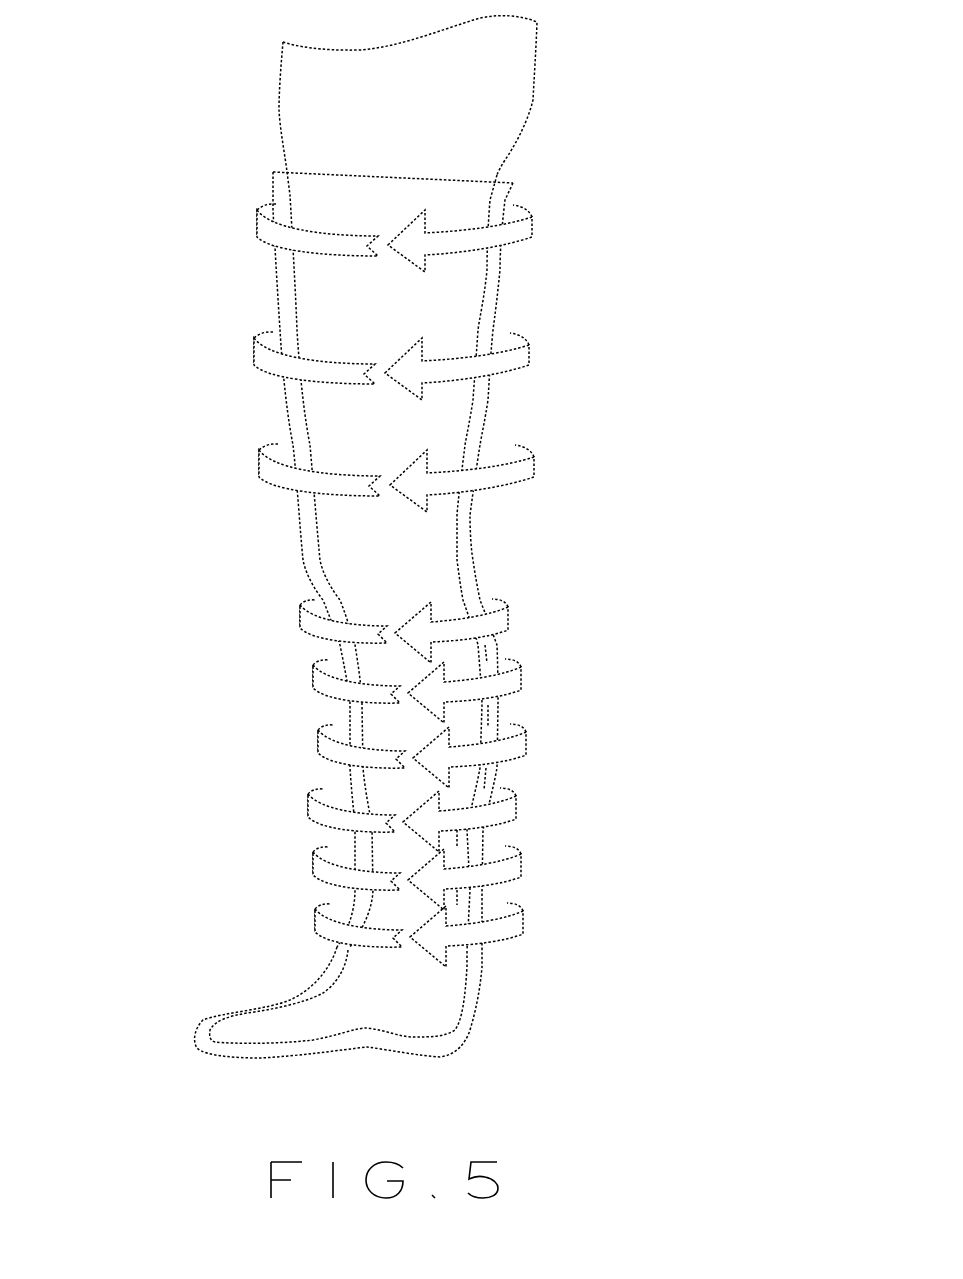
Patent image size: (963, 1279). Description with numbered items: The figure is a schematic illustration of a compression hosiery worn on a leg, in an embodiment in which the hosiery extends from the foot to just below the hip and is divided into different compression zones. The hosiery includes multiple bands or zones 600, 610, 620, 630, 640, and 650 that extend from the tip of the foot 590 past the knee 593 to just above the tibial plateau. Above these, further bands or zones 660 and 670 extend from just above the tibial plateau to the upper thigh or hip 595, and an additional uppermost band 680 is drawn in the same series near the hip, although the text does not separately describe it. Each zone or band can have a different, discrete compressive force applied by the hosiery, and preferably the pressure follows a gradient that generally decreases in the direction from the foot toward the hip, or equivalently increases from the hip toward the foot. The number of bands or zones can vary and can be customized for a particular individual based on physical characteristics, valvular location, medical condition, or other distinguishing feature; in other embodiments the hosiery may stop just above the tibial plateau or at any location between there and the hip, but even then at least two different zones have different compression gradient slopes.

The foot 590 is at (193, 1034).
The knee 593 is at (300, 561).
The upper thigh or hip 595 is at (512, 182).
The band or zone 600 is at (443, 1000).
The band or zone 610 is at (423, 913).
The band or zone 620 is at (423, 852).
The band or zone 630 is at (422, 792).
The band or zone 640 is at (428, 729).
The band or zone 650 is at (412, 669).
The band or zone 660 is at (432, 562).
The band or zone 670 is at (432, 424).
The compression band 680 is at (433, 307).